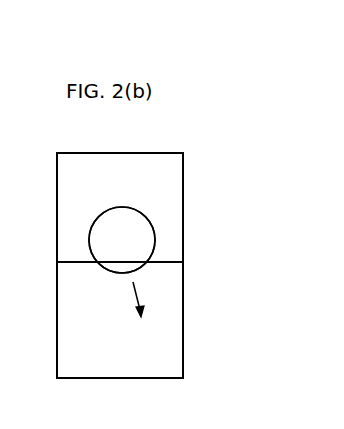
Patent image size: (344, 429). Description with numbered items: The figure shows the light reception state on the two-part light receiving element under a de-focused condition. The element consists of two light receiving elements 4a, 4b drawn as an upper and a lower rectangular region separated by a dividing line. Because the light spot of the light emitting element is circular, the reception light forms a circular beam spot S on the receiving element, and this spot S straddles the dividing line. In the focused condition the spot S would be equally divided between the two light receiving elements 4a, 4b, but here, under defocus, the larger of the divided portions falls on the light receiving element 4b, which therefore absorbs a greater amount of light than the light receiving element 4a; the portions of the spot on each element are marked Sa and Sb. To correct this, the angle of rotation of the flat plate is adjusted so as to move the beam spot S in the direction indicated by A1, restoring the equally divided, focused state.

The light receiving element 4a is at (170, 218).
The light receiving element 4b is at (167, 325).
The beam spot S is at (122, 240).
The spot portion on upper plate Sa is at (141, 223).
The spot portion on lower plate Sb is at (116, 267).
The direction A1 is at (128, 312).